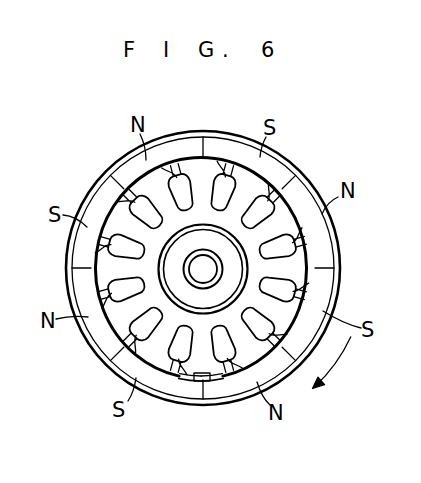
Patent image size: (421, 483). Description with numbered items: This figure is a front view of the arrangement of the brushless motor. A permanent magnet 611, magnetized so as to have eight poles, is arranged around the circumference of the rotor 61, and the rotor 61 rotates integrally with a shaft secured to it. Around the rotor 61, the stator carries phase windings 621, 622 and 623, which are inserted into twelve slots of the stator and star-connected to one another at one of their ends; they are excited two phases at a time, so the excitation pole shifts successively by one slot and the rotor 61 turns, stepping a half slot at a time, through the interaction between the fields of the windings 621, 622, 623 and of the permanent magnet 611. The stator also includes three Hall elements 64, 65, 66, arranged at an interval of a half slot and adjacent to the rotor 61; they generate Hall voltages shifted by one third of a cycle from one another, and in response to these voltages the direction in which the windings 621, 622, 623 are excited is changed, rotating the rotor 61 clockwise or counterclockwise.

The rotor 61 is at (331, 259).
The permanent magnet 611 is at (100, 346).
The phase winding 621 is at (165, 442).
The phase winding 622 is at (290, 182).
The phase winding 623 is at (225, 440).
The Hall element 64 is at (160, 376).
The Hall element 65 is at (200, 378).
The Hall element 66 is at (230, 382).